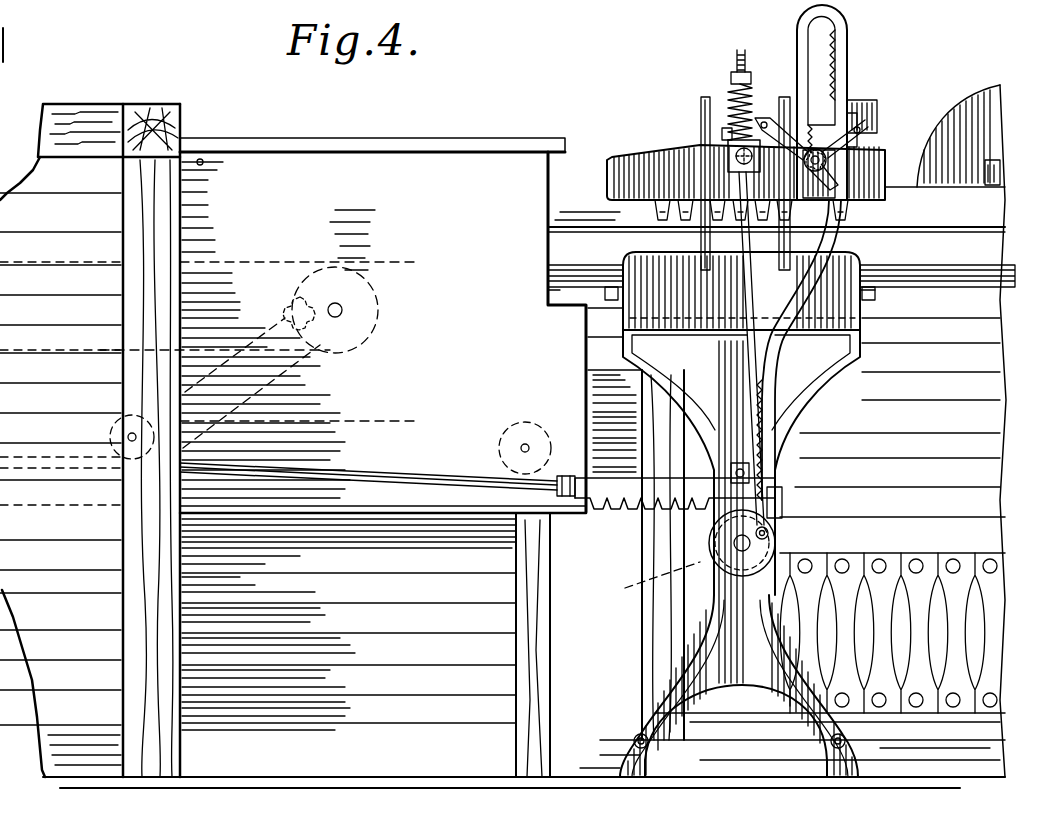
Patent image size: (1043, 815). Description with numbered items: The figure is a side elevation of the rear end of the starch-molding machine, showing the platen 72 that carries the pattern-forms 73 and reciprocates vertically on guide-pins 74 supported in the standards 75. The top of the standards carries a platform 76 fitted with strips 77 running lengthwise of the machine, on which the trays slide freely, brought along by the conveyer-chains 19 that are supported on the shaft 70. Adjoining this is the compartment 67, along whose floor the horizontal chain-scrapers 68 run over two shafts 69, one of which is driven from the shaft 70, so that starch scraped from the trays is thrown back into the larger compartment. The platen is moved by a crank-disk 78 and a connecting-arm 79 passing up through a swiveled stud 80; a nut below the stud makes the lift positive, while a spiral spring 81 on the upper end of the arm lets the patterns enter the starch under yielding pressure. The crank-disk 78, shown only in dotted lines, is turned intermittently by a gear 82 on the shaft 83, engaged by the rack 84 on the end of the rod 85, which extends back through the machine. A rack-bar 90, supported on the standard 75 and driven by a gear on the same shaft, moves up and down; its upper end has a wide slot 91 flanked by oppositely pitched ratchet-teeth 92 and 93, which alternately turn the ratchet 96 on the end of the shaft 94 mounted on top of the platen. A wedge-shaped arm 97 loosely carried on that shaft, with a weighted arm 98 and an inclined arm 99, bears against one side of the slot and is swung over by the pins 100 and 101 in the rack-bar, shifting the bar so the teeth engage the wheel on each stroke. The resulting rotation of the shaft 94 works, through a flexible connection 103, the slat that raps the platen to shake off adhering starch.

The conveyer-chains 19 is at (282, 272).
The compartment 67 is at (261, 315).
The horizontal chain-scrapers 68 is at (300, 383).
The shafts 69 is at (530, 445).
The shaft 70 is at (342, 310).
The platen 72 is at (645, 158).
The pattern-forms 73 is at (725, 210).
The guide-pins 74 is at (700, 105).
The standards 75 is at (697, 678).
The platform 76 is at (935, 287).
The strips 77 is at (955, 265).
The crank-disk 78 is at (734, 545).
The connecting-arm 79 is at (767, 433).
The swiveled stud 80 is at (735, 155).
The spiral spring 81 is at (730, 95).
The gear 82 is at (647, 582).
The shaft 83 is at (712, 530).
The rack 84 is at (675, 492).
The rod 85 is at (377, 480).
The rack-bar 90 is at (790, 478).
The wide slot 91 is at (822, 33).
The ratchet-teeth 92 is at (832, 105).
The ratchet-teeth 93 is at (818, 65).
The shaft 94 is at (830, 140).
The ratchet 96 is at (870, 145).
The wedge-shaped arm 97 is at (833, 173).
The arm 98 is at (760, 117).
The arm 99 is at (815, 147).
The pin 100 is at (817, 153).
The pin 101 is at (862, 135).
The flexible connection 103 is at (727, 133).